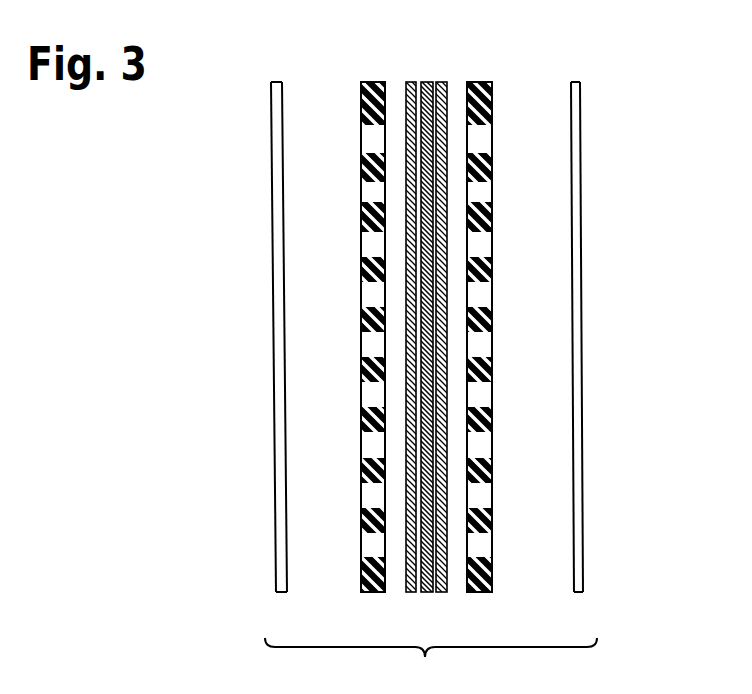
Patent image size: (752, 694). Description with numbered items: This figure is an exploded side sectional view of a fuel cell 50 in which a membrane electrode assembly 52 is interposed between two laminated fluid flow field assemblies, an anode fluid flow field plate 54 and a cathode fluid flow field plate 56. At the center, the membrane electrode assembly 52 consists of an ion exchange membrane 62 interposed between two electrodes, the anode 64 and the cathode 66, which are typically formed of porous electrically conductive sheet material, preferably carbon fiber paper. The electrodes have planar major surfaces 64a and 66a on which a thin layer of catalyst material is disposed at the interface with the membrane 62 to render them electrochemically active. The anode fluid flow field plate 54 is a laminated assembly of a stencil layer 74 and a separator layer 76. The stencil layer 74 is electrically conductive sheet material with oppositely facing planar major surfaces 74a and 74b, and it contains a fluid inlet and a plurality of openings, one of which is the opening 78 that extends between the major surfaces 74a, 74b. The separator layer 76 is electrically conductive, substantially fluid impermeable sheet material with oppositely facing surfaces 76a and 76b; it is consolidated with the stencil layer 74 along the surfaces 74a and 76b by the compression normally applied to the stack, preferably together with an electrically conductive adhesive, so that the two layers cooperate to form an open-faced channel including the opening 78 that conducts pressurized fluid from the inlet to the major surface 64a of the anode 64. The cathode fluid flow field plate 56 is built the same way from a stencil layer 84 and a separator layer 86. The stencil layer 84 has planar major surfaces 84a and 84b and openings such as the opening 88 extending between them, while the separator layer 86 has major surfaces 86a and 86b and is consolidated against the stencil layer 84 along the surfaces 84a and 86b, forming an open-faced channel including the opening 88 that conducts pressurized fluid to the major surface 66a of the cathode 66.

The fuel cell 50 is at (598, 222).
The membrane electrode assembly 52 is at (425, 321).
The anode fluid flow field plate 54 is at (576, 321).
The cathode fluid flow field plate 56 is at (285, 325).
The ion exchange membrane 62 is at (427, 82).
The anode 64 is at (533, 296).
The planar major surface of anode 64a is at (438, 82).
The cathode 66 is at (315, 300).
The planar major surface of cathode 66a is at (408, 82).
The stencil layer 74 is at (533, 304).
The major surface of stencil layer 74a is at (492, 113).
The major surface of stencil layer 74b is at (474, 204).
The separator layer 76 is at (602, 326).
The surface of separator layer 76a is at (582, 132).
The surface of separator layer 76b is at (571, 163).
The opening 78 is at (492, 258).
The stencil layer 84 is at (315, 310).
The major surface of stencil layer 84a is at (362, 97).
The major surface of stencil layer 84b is at (378, 205).
The separator layer 86 is at (260, 332).
The major surface of separator layer 86a is at (272, 160).
The major surface of separator layer 86b is at (284, 172).
The opening 88 is at (370, 288).